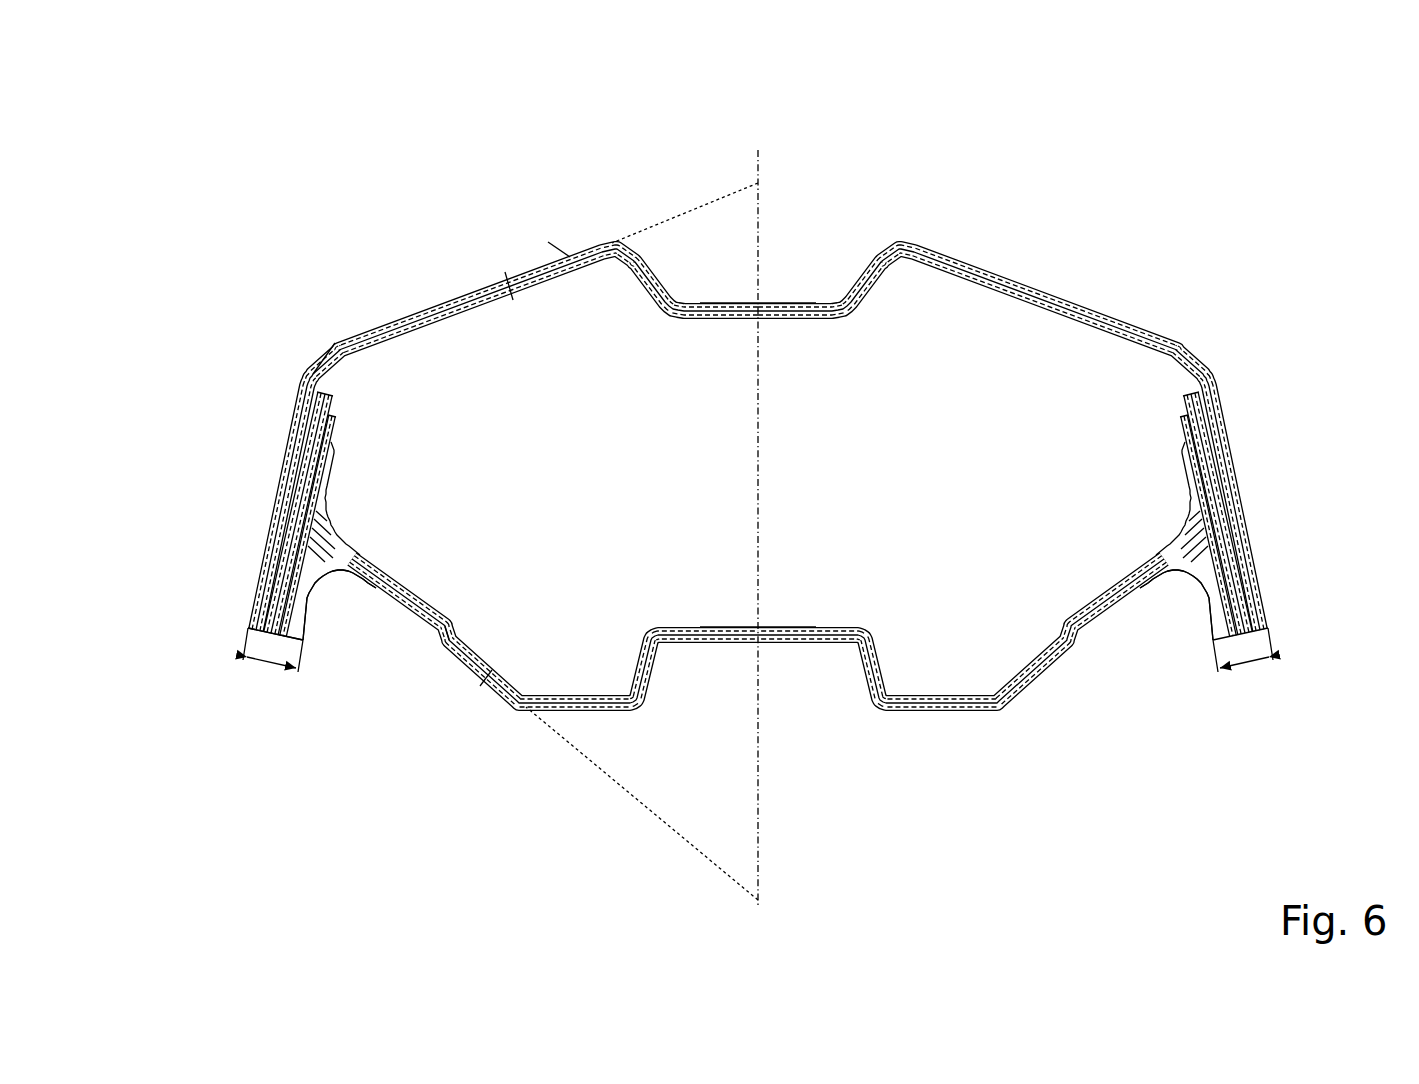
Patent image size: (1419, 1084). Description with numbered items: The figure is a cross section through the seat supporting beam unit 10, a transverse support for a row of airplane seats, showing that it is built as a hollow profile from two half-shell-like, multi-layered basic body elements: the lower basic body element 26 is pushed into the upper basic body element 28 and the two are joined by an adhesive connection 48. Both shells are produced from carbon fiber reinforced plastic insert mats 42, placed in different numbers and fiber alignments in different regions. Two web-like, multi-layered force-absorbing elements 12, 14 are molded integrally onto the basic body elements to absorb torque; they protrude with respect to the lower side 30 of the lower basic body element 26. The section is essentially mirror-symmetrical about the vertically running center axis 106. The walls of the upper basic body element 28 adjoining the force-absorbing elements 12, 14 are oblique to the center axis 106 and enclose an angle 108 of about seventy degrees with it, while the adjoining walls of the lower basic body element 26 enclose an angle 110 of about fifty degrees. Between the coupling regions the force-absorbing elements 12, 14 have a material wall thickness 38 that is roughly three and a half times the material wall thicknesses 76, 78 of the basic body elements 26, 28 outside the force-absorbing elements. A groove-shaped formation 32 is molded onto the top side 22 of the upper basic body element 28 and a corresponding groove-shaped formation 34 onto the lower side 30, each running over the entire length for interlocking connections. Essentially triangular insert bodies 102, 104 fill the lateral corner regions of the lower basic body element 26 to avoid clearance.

The seat supporting beam unit 10 is at (701, 484).
The force-absorbing element 12 is at (284, 647).
The force-absorbing element 14 is at (1236, 640).
The top side 22 is at (615, 238).
The lower basic body element 26 is at (390, 620).
The upper basic body element 28 is at (558, 250).
The lower side 30 is at (437, 642).
The formation 32 is at (783, 300).
The formation 34 is at (805, 650).
The material wall thickness 38 is at (272, 662).
The carbon fiber reinforced plastic insert mats 42 is at (282, 492).
The adhesive connection 48 is at (325, 395).
The material wall thickness 76 is at (522, 322).
The material wall thickness 78 is at (516, 645).
The insert body 102 is at (335, 575).
The insert body 104 is at (1180, 590).
The center axis 106 is at (760, 497).
The angle 108 is at (746, 228).
The angle 110 is at (748, 862).